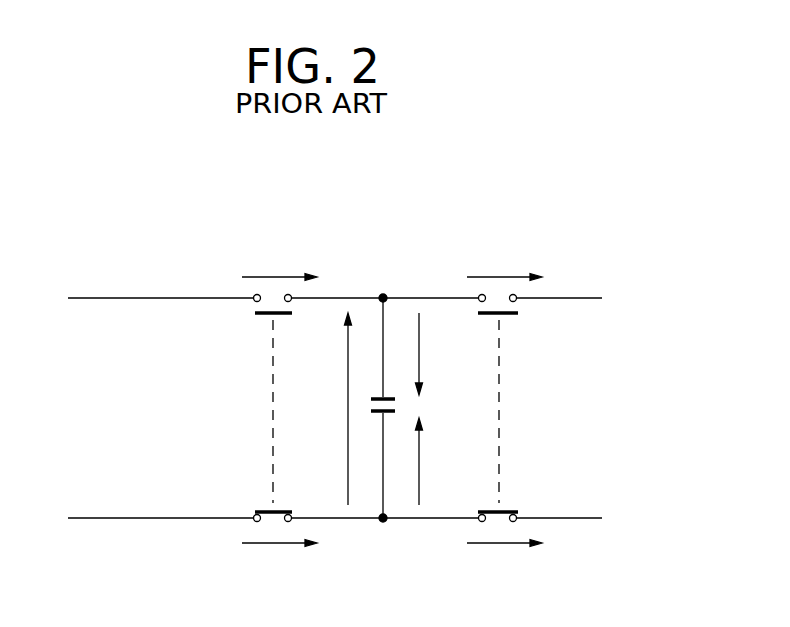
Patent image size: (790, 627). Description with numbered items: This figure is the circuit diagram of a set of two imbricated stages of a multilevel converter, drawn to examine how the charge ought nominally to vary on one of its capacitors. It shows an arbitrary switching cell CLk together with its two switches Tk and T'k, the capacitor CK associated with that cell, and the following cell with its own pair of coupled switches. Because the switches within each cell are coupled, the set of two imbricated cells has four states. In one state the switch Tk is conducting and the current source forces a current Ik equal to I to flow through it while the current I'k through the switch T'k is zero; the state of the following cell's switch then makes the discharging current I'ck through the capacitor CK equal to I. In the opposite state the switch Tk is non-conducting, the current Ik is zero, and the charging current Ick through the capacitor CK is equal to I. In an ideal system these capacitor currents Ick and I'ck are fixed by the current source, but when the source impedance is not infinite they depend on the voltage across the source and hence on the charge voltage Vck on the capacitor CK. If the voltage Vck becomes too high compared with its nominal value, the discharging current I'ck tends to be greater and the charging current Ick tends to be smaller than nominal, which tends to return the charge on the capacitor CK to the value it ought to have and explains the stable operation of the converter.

The capacitor CK is at (397, 408).
The switch Tk is at (510, 316).
The switch T'k is at (515, 492).
The switching cell CLk is at (486, 213).
The current Ik is at (504, 263).
The current I'k is at (504, 561).
The charge voltage Vck is at (330, 409).
The charging current Ick is at (441, 354).
The discharging current I'ck is at (445, 461).